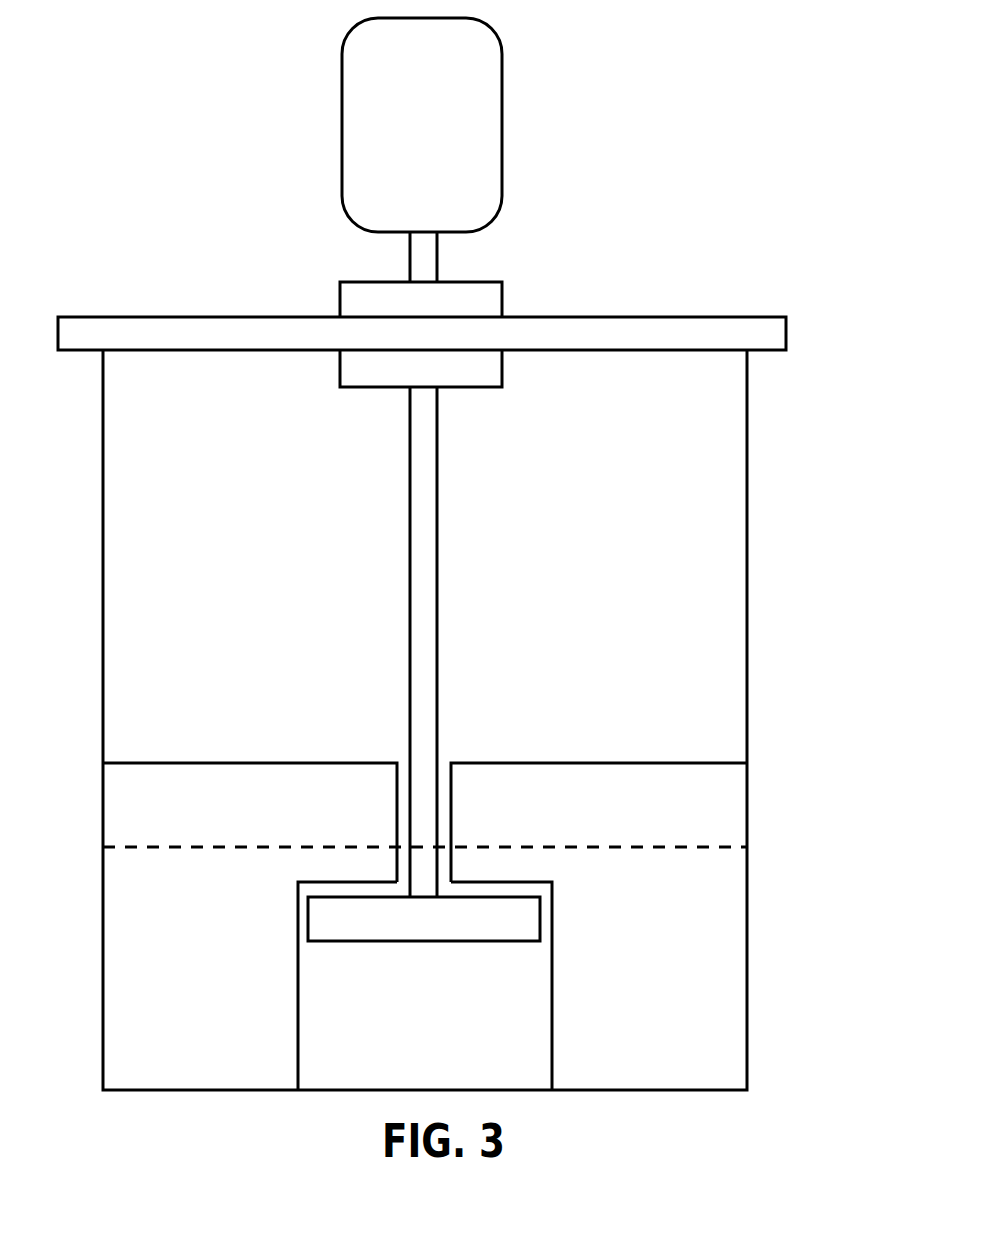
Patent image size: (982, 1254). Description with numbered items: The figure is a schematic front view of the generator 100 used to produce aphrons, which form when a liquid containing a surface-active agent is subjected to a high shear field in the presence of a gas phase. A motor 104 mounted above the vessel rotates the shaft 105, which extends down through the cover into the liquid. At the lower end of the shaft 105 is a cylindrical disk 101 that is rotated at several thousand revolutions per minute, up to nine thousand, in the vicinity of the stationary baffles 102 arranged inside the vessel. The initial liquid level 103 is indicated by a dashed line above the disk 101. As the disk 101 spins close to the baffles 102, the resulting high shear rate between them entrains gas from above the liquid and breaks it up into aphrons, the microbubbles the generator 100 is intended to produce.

The generator 100 is at (772, 1063).
The cylindrical disk 101 is at (434, 928).
The stationary baffles 102 is at (143, 791).
The initial liquid level 103 is at (723, 847).
The motor 104 is at (485, 107).
The shaft 105 is at (423, 532).